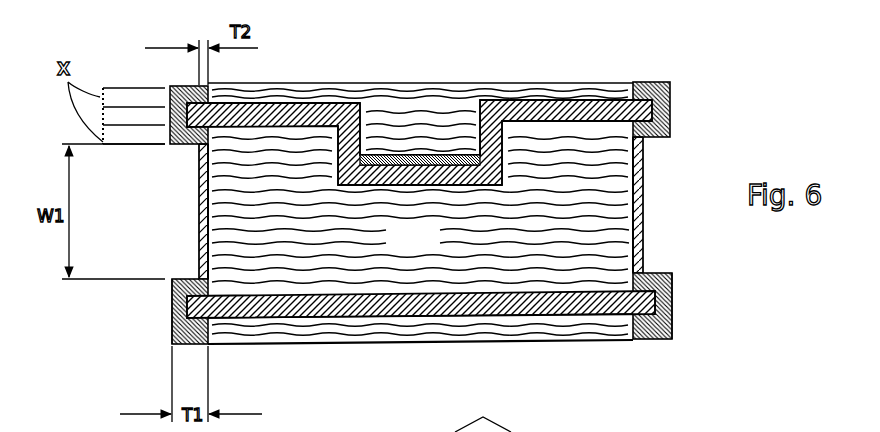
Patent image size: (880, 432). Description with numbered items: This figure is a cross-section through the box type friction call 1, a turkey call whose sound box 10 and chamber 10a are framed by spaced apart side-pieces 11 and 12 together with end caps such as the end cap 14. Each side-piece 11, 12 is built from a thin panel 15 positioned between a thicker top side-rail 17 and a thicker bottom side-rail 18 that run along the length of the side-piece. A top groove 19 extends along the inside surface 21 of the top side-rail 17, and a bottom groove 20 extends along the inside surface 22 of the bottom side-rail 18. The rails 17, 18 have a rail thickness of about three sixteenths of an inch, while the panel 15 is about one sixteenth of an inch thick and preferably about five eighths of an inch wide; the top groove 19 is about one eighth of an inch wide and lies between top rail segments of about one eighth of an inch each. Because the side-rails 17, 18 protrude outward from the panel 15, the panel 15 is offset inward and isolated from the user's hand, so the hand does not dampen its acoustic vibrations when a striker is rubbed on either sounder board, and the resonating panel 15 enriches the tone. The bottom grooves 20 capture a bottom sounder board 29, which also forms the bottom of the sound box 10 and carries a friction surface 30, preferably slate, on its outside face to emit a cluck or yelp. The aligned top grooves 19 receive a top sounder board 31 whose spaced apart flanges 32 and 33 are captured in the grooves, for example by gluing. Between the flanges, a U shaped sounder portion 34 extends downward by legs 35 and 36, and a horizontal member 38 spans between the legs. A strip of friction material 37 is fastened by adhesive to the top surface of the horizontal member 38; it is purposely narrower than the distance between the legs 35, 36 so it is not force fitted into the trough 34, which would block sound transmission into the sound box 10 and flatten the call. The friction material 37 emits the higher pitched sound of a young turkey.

The box type friction call 1 is at (360, 364).
The sound box 10 is at (644, 259).
The chamber 10a is at (420, 212).
The side-piece 11 is at (675, 277).
The side-piece 12 is at (165, 291).
The end cap 14 is at (222, 218).
The panel 15 is at (200, 254).
The top side-rail 17 is at (182, 84).
The bottom side-rail 18 is at (170, 334).
The top groove 19 is at (207, 100).
The bottom groove 20 is at (165, 308).
The inside surface 21 is at (218, 150).
The inside surface 22 is at (215, 342).
The bottom sounder board 29 is at (458, 318).
The friction surface 30 is at (490, 318).
The top sounder board 31 is at (517, 105).
The flange 32 is at (255, 103).
The flange 33 is at (603, 100).
The U shaped sounder portion 34 is at (410, 142).
The leg 35 is at (486, 110).
The leg 36 is at (365, 126).
The friction material 37 is at (427, 157).
The horizontal member 38 is at (452, 163).